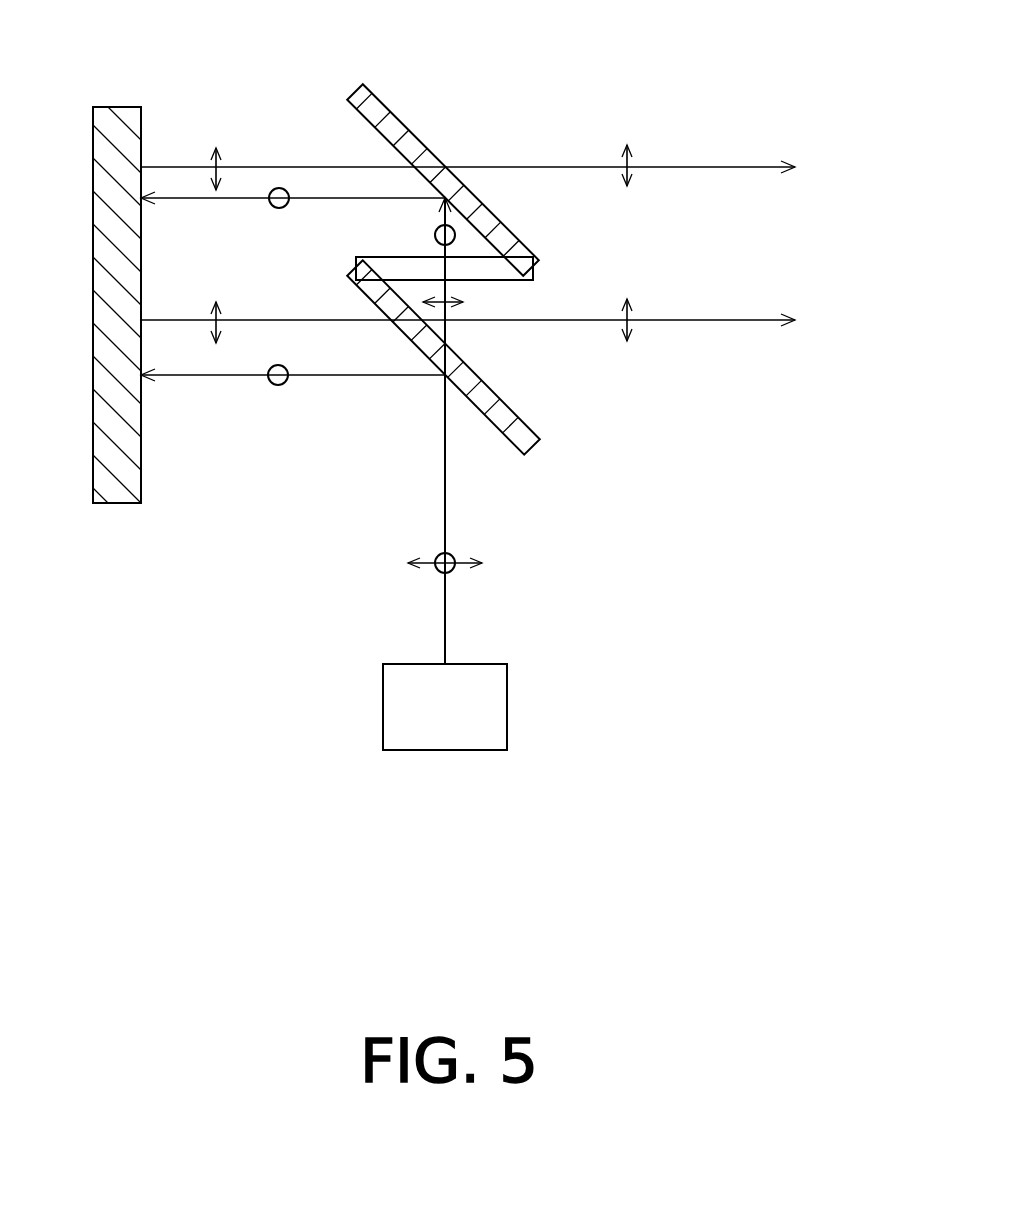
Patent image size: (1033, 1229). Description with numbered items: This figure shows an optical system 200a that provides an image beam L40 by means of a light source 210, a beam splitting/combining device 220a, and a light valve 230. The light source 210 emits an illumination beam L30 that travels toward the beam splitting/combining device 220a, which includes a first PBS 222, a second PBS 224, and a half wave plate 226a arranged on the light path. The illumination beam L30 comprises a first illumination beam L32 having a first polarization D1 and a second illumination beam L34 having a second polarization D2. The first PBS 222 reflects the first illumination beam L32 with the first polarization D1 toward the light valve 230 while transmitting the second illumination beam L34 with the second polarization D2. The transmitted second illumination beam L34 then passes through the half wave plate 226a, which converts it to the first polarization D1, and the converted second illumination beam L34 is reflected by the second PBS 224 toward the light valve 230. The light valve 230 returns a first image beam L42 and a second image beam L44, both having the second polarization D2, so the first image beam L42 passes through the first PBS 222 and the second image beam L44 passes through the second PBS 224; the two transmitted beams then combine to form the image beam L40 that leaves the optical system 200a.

The light valve 230 is at (105, 107).
The second PBS 224 is at (370, 107).
The first PBS 222 is at (541, 443).
The half wave plate 226a is at (500, 273).
The light source 210 is at (507, 707).
The beam splitting/combining device 220a is at (778, 598).
The optical system 200a is at (855, 795).
The illumination beam L30 is at (445, 470).
The first illumination beam L32 is at (363, 377).
The second illumination beam L34 is at (462, 292).
The image beam L40 is at (649, 402).
The first image beam L42 is at (170, 320).
The second image beam L44 is at (320, 165).
The first polarization D1 is at (278, 385).
The second polarization D2 is at (628, 157).